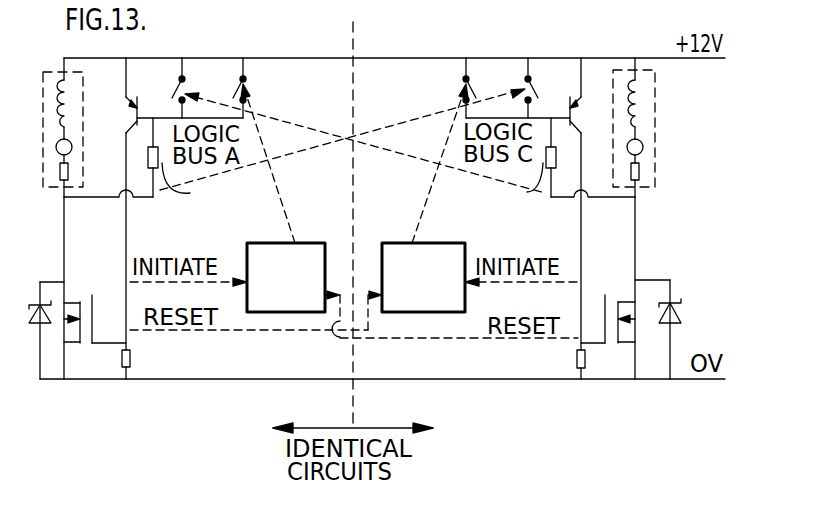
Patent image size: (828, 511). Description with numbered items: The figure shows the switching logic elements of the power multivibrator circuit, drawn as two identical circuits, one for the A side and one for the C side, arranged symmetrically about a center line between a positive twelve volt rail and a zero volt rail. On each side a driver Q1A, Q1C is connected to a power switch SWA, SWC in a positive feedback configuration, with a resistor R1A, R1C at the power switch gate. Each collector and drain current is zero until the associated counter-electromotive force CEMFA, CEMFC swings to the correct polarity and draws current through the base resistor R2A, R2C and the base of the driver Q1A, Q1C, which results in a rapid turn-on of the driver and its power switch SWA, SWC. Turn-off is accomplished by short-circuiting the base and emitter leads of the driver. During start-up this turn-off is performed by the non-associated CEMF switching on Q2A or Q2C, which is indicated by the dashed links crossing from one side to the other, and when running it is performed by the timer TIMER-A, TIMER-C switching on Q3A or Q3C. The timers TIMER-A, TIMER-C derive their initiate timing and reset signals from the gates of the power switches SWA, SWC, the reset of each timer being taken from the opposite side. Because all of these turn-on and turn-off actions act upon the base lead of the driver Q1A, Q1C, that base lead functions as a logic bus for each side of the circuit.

The counter-electromotive force (CEMF) sensing element for phase A CEMFA is at (76, 113).
The counter-electromotive force (CEMF) sensing element for phase C CEMFC is at (679, 127).
The driver transistor Q1A is at (112, 204).
The driver transistor Q1C is at (590, 204).
The start-up turn-off switch Q2A is at (157, 88).
The running turn-off switch Q3A is at (217, 88).
The start-up turn-off switch Q2C is at (551, 88).
The running turn-off switch Q3C is at (491, 88).
The base resistor R2A is at (185, 169).
The base resistor R2C is at (521, 169).
The power switch SWA is at (95, 303).
The power switch SWC is at (608, 304).
The gate resistor R1A is at (147, 363).
The gate resistor R1C is at (557, 363).
The timer TIMER-A is at (286, 277).
The timer TIMER-C is at (423, 277).